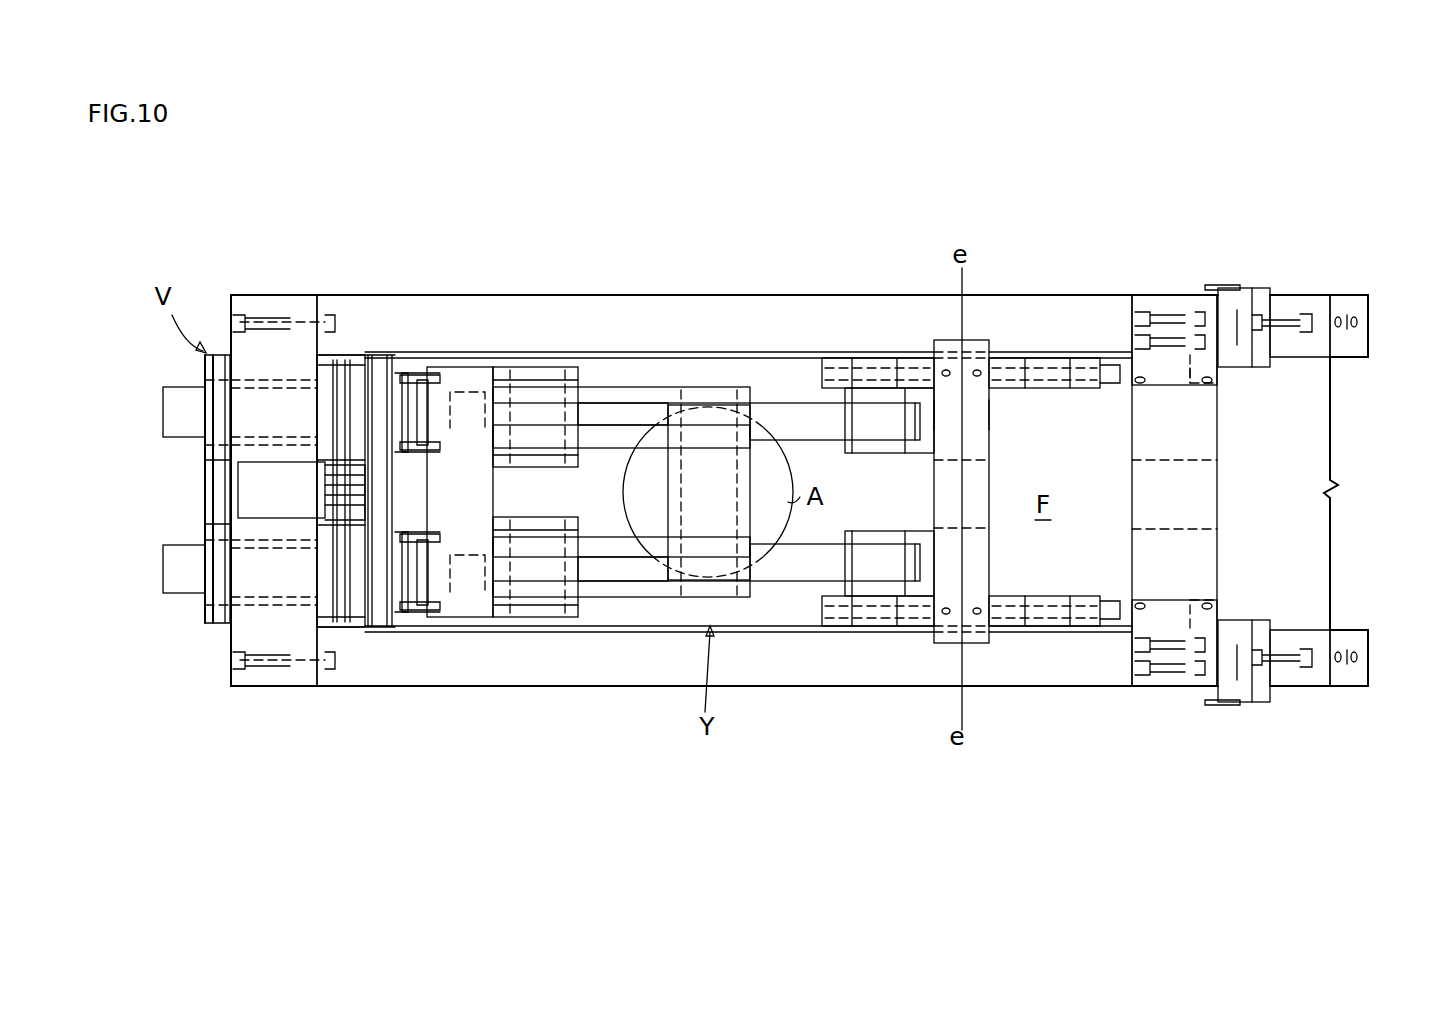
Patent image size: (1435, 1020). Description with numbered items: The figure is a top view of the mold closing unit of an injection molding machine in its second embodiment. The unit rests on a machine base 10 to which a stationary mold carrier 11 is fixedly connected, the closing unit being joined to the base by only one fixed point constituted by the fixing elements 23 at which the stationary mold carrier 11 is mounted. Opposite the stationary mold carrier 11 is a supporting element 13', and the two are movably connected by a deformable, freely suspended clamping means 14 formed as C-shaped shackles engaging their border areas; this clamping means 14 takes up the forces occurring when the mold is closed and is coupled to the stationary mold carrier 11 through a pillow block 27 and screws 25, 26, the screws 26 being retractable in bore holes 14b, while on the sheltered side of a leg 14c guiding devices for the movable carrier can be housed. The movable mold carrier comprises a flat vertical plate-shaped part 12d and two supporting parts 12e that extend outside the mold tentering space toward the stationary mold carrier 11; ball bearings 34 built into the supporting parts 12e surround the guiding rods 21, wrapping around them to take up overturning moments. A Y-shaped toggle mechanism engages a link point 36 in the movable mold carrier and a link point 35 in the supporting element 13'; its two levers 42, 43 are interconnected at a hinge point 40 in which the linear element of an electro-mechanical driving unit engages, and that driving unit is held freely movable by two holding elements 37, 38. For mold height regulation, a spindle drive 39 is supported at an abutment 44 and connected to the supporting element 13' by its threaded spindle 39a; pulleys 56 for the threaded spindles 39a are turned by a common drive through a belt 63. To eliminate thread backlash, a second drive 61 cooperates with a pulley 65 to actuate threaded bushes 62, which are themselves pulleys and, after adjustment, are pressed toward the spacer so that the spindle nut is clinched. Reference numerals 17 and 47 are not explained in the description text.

The machine base 10 is at (1263, 562).
The stationary mold carrier 11 is at (1200, 433).
The plate-shaped part 12d is at (980, 430).
The supporting parts 12e is at (1087, 377).
The supporting element 13' is at (460, 492).
The clamping means 14 is at (1072, 297).
The bore holes 14b is at (1368, 300).
The leg 14c is at (890, 330).
The bearing block 17 is at (1225, 320).
The guiding rods 21 is at (752, 375).
The fixing elements 23 is at (1222, 392).
The screws 25 is at (1150, 298).
The screws 26 is at (1305, 296).
The pillow block 27 is at (1240, 288).
The ball bearings 34 is at (1003, 347).
The link point 35 is at (585, 450).
The link point 36 is at (880, 455).
The holding element 37 is at (645, 405).
The holding element 38 is at (808, 440).
The spindle drive 39 is at (162, 507).
The threaded spindle 39a is at (178, 407).
The hinge point 40 is at (697, 480).
The lever 42 is at (590, 375).
The lever 43 is at (793, 405).
The abutment 44 is at (280, 308).
The end plate lower portion 47 is at (280, 690).
The pulleys 56 is at (205, 380).
The drive 61 is at (273, 505).
The threaded bushes 62 is at (380, 345).
The belt 63 is at (205, 492).
The pulley 65 is at (396, 482).